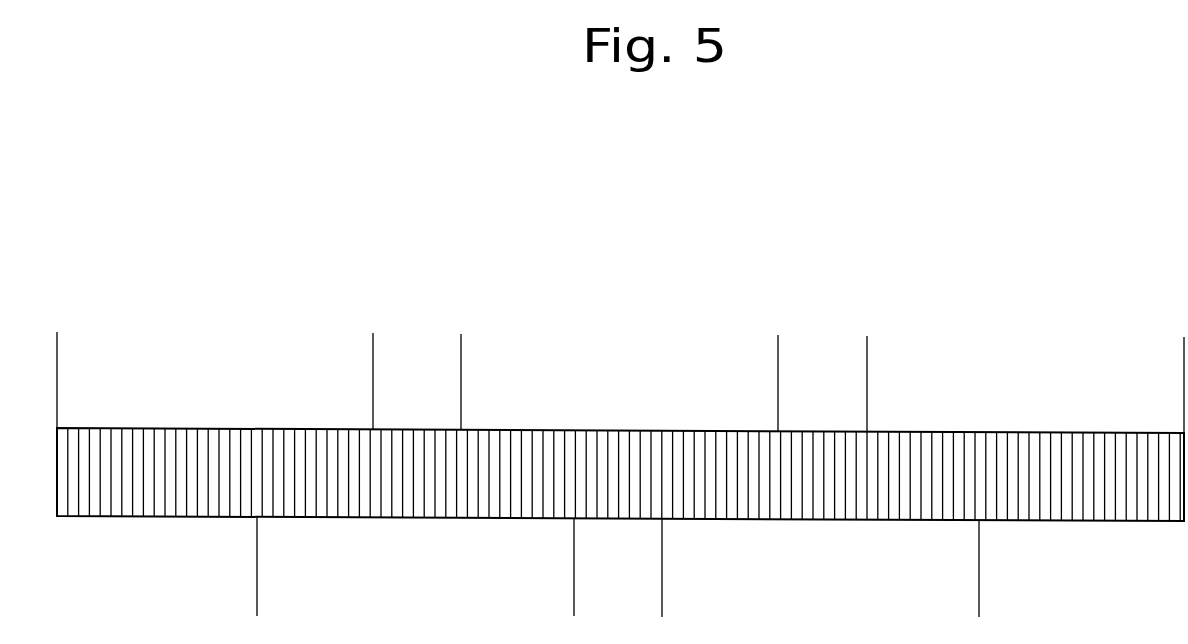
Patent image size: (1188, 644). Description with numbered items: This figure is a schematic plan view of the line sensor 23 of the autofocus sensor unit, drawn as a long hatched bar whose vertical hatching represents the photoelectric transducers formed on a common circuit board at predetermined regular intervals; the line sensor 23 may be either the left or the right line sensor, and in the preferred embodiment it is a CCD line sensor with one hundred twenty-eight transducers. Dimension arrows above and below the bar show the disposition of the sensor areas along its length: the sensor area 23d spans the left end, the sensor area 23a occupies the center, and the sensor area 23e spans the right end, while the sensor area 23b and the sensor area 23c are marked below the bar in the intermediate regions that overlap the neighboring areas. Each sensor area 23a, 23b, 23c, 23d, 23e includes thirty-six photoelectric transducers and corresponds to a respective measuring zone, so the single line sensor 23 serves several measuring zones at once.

The line sensor 23 is at (773, 235).
The sensor area 23a is at (461, 344).
The sensor area 23b is at (574, 607).
The sensor area 23c is at (979, 608).
The sensor area 23d is at (57, 342).
The sensor area 23e is at (1184, 347).